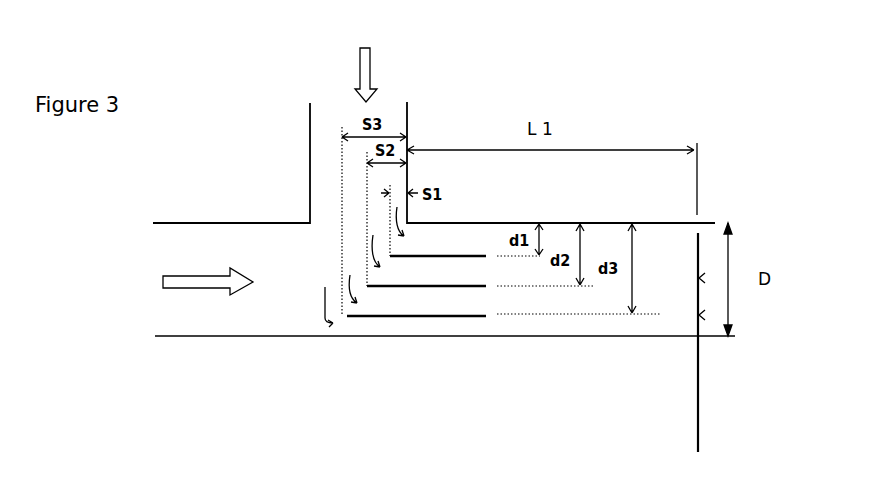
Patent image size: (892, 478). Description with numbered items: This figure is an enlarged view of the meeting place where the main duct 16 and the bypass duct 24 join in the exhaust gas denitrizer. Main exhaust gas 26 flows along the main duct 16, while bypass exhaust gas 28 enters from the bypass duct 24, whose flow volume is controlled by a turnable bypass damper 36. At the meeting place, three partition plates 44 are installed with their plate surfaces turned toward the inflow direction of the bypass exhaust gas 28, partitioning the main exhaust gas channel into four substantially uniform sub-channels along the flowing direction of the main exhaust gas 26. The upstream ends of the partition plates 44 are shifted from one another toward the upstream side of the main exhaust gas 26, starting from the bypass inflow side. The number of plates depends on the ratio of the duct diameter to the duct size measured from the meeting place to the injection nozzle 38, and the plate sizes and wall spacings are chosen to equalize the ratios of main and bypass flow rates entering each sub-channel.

The main duct 16 is at (326, 336).
The bypass duct 24 is at (310, 160).
The main exhaust gas 26 is at (207, 293).
The bypass exhaust gas 28 is at (370, 62).
The bypass damper 36 is at (697, 395).
The injection nozzle 38 is at (704, 250).
The partition plates 44 is at (468, 288).